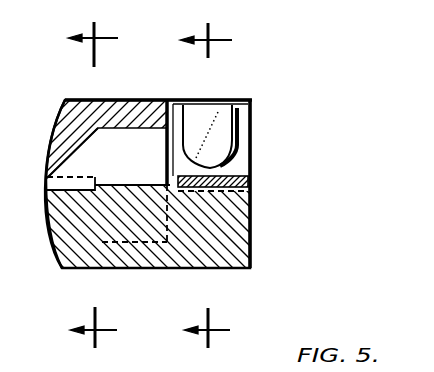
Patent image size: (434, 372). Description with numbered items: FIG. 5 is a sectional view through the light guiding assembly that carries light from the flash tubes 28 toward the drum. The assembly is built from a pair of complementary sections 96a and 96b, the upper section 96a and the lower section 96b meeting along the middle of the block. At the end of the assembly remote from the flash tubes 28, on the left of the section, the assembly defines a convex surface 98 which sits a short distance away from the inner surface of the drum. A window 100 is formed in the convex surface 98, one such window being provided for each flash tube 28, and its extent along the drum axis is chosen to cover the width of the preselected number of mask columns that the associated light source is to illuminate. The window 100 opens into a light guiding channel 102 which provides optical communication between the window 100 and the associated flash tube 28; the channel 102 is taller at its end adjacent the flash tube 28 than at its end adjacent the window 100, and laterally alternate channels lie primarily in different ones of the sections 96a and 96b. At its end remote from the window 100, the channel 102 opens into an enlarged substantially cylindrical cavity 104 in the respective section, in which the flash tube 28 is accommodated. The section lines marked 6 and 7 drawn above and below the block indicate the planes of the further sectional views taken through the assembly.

The section line 6- 6 is at (85, 185).
The section line 7- 7 is at (199, 185).
The flash tube 28 is at (225, 135).
The complementary section 96a is at (57, 121).
The complementary section 96b is at (63, 252).
The convex surface 98 is at (48, 161).
The window 100 is at (46, 182).
The light guiding channel 102 is at (133, 127).
The cylindrical cavity 104 is at (233, 164).